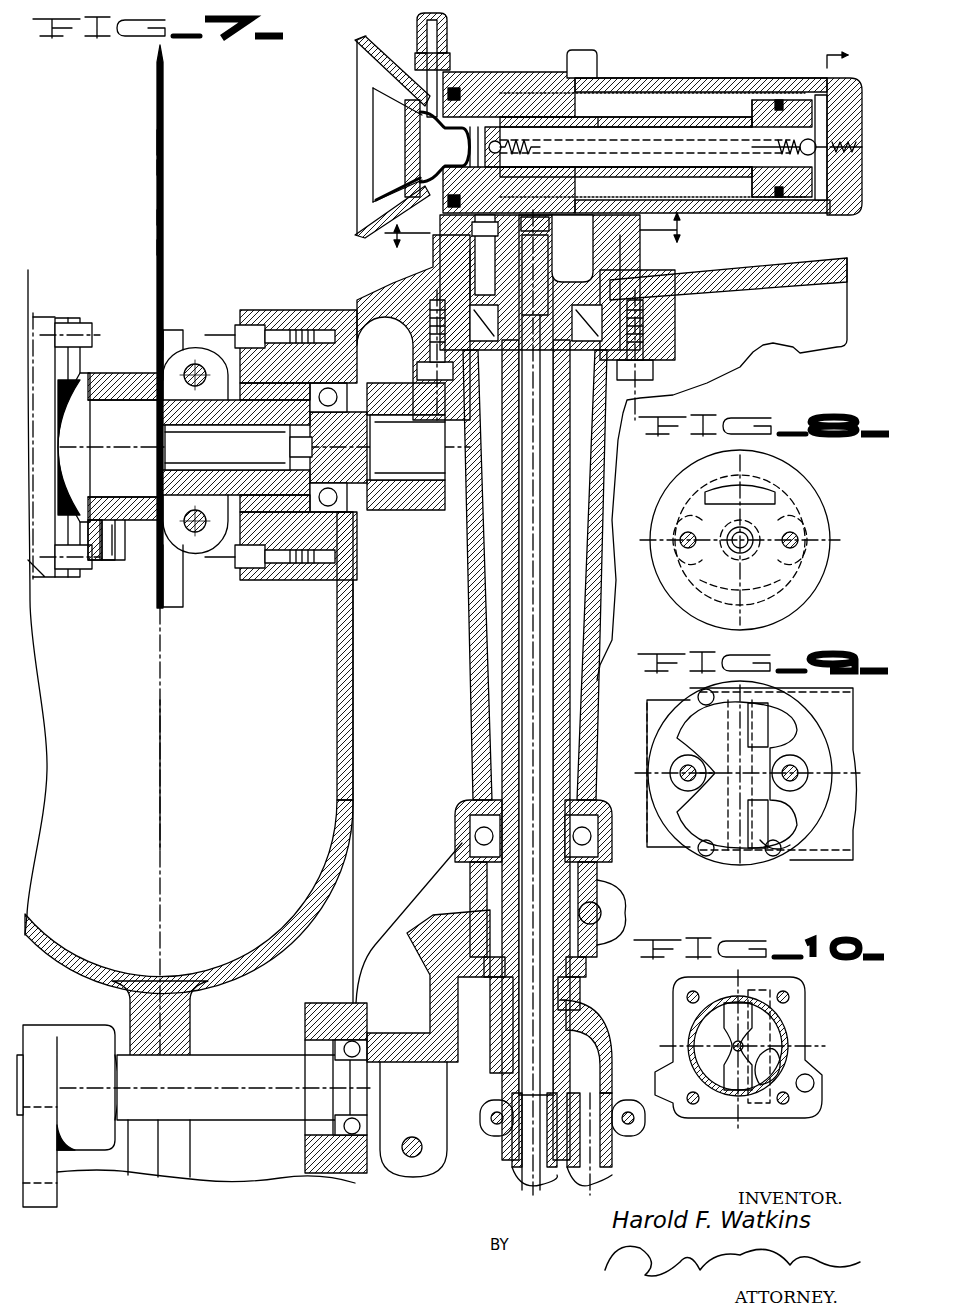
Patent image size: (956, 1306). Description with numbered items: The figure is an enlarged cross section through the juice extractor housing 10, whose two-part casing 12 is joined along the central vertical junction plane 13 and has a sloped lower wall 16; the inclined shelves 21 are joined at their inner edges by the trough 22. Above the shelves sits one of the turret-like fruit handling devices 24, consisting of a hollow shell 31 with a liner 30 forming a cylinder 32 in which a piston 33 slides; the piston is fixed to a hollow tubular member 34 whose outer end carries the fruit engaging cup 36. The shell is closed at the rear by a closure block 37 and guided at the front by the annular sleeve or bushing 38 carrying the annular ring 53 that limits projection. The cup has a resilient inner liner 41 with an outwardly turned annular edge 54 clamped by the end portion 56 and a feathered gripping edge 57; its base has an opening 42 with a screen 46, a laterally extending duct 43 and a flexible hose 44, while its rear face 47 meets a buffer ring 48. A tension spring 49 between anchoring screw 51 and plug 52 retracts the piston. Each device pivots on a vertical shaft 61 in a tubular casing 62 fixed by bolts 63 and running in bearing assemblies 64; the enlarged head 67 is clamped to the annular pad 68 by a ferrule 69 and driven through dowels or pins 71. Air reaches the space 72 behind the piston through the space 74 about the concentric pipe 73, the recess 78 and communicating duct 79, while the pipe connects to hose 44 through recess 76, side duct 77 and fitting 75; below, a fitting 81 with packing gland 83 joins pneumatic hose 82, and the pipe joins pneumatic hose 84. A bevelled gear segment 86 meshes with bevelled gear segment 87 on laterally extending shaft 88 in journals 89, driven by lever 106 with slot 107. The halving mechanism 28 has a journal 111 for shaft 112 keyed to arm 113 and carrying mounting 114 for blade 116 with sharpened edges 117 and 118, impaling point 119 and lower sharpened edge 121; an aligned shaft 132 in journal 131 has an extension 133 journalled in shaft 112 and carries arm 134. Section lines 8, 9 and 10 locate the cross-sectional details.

In FIG. 7, the section line 8— 8 is at (537, 245).
In FIG. 7, the section line 9— 9 is at (537, 225).
In FIG. 7, the housing 10 is at (831, 142).
In FIG. 7, the casing 12 is at (357, 688).
In FIG. 7, the central vertical junction plane 13 is at (160, 770).
In FIG. 7, the lower wall 16 is at (203, 978).
In FIG. 7, the inclined shelves 21 is at (778, 268).
In FIG. 7, the trough 22 is at (345, 776).
In FIG. 7, the fruit handling devices 24 is at (644, 72).
In FIG. 7, the fruit halving and presenting mechanism 28 is at (150, 328).
In FIG. 7, the liner 30 is at (738, 212).
In FIG. 7, the hollow shell 31 is at (667, 78).
In FIG. 7, the cylinder 32 is at (700, 103).
In FIG. 7, the piston 33 is at (775, 100).
In FIG. 7, the hollow tubular member 34 is at (652, 92).
In FIG. 7, the fruit engaging cup 36 is at (360, 38).
In FIG. 7, the closure block 37 is at (827, 233).
In FIG. 10, the closure block 37 is at (673, 1015).
In FIG. 7, the annular sleeve or bushing 38 is at (495, 80).
In FIG. 7, the inner liner 41 is at (362, 65).
In FIG. 7, the opening 42 is at (430, 132).
In FIG. 7, the laterally extending duct 43 is at (427, 62).
In FIG. 7, the flexible tube or hose 44 is at (418, 18).
In FIG. 7, the screen 46 is at (440, 160).
In FIG. 7, the rear face 47 is at (440, 60).
In FIG. 7, the buffer ring 48 is at (455, 90).
In FIG. 7, the tension spring 49 is at (530, 140).
In FIG. 7, the anchoring screw 51 is at (840, 147).
In FIG. 10, the anchoring screw 51 is at (745, 1044).
In FIG. 7, the plug 52 is at (497, 130).
In FIG. 7, the annular ring 53 is at (600, 118).
In FIG. 7, the outwardly turned annular edge 54 is at (405, 112).
In FIG. 7, the end portion 56 is at (395, 190).
In FIG. 7, the gripping edge 57 is at (380, 93).
In FIG. 7, the vertical shafts 61 is at (505, 640).
In FIG. 7, the tubular casings 62 is at (468, 578).
In FIG. 7, the bolts 63 is at (417, 357).
In FIG. 7, the bearing assemblies 64 is at (600, 320).
In FIG. 7, the enlarged head 67 is at (610, 262).
In FIG. 8, the enlarged head 67 is at (782, 570).
In FIG. 7, the annular pad 68 is at (620, 218).
In FIG. 9, the annular pad 68 is at (815, 740).
In FIG. 7, the ferrule 69 is at (480, 262).
In FIG. 7, the dowels or pins 71 is at (470, 272).
In FIG. 8, the dowels or pins 71 is at (680, 537).
In FIG. 9, the dowels or pins 71 is at (678, 768).
In FIG. 7, the space behind piston 72 is at (828, 100).
In FIG. 10, the space behind piston 72 is at (765, 1018).
In FIG. 7, the concentric pipe 73 is at (527, 607).
In FIG. 8, the concentric pipe 73 is at (752, 533).
In FIG. 7, the space about pipe 74 is at (517, 672).
In FIG. 9, the fitting 75 is at (787, 848).
In FIG. 7, the recess 76 is at (572, 248).
In FIG. 9, the recess 76 is at (700, 828).
In FIG. 9, the side duct 77 is at (825, 850).
In FIG. 8, the recess 78 is at (712, 498).
In FIG. 9, the recess 78 is at (675, 725).
In FIG. 9, the communicating duct 79 is at (835, 697).
In FIG. 10, the communicating duct 79 is at (812, 1078).
In FIG. 7, the fitting 81 is at (575, 1010).
In FIG. 7, the pneumatic hose 82 is at (605, 1162).
In FIG. 7, the packing gland 83 is at (500, 1070).
In FIG. 7, the pneumatic hose 84 is at (512, 1172).
In FIG. 7, the bevelled gear segment 86 is at (465, 908).
In FIG. 7, the bevelled gear segment 87 is at (410, 976).
In FIG. 7, the laterally extending shaft 88 is at (210, 1112).
In FIG. 7, the journals 89 is at (325, 1175).
In FIG. 7, the lever 106 is at (68, 1035).
In FIG. 7, the slot 107 is at (62, 1183).
In FIG. 7, the journal 111 is at (305, 578).
In FIG. 7, the shaft 112 is at (195, 412).
In FIG. 7, the arm 113 is at (398, 505).
In FIG. 7, the mounting 114 is at (192, 352).
In FIG. 7, the blade or knife 116 is at (157, 217).
In FIG. 7, the sharpened edge 117 is at (157, 95).
In FIG. 7, the sharpened edge 118 is at (157, 247).
In FIG. 7, the impaling point 119 is at (157, 141).
In FIG. 7, the lower sharpened edge 121 is at (157, 165).
In FIG. 7, the journal 131 is at (35, 562).
In FIG. 7, the shaft 132 is at (122, 362).
In FIG. 7, the extension 133 is at (175, 460).
In FIG. 7, the arm 134 is at (115, 560).